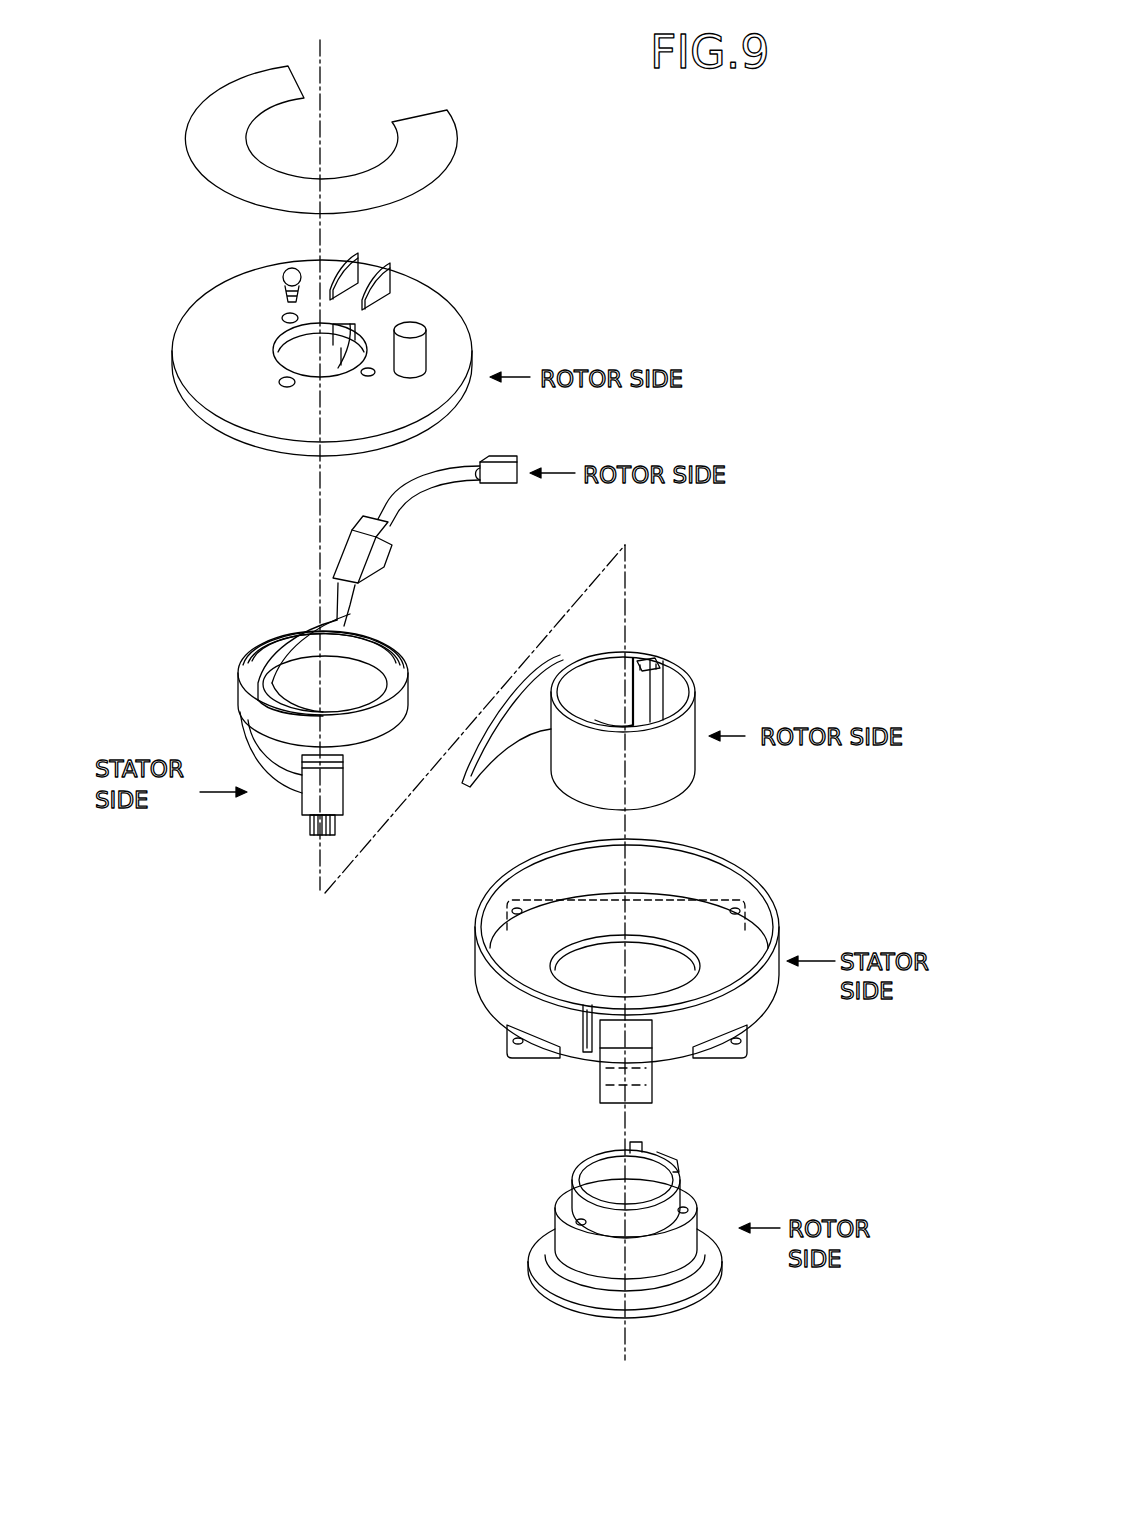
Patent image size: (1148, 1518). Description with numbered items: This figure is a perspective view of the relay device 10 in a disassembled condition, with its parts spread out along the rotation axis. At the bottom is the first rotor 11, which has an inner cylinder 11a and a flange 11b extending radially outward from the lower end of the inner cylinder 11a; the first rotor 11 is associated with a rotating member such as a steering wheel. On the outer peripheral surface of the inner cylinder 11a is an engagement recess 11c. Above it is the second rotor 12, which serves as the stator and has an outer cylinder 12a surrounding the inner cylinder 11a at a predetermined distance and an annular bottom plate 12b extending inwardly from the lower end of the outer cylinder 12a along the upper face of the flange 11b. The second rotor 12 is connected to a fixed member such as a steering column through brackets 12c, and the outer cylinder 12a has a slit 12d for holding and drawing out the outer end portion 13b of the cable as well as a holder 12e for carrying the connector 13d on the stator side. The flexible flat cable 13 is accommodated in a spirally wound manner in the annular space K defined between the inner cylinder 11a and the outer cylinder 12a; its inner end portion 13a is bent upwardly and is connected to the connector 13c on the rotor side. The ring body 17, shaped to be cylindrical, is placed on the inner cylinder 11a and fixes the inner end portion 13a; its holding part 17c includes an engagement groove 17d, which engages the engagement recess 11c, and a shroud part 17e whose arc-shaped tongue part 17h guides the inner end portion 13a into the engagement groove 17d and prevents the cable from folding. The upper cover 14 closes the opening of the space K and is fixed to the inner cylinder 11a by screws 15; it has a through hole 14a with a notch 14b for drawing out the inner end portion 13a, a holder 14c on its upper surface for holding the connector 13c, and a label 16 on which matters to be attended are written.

The relay device 10 is at (690, 204).
The first rotor 11 is at (613, 1245).
The inner cylinder 11a is at (560, 1232).
The flange 11b is at (545, 1258).
The engagement recess 11c is at (680, 1150).
The second rotor 12 is at (630, 958).
The outer cylinder 12a is at (690, 847).
The annular bottom plate 12b is at (688, 927).
The brackets 12c is at (505, 1048).
The slit 12d is at (583, 1040).
The holder 12e is at (655, 1085).
The flexible flat cable 13 is at (343, 659).
The inner end portion 13a is at (360, 606).
The outer end portion 13b is at (290, 794).
The connector on the rotor side 13c is at (351, 524).
The connector on the stator side 13d is at (348, 788).
The upper cover 14 is at (352, 345).
The through hole 14a is at (283, 372).
The notch 14b is at (342, 376).
The holder 14c is at (390, 272).
The screws 15 is at (286, 270).
The label 16 is at (455, 133).
The ring body 17 is at (631, 701).
The holding part 17c is at (657, 638).
The engagement groove 17d is at (660, 661).
The shroud part 17e is at (672, 659).
The tongue part 17h is at (496, 762).
The annular space K is at (737, 947).